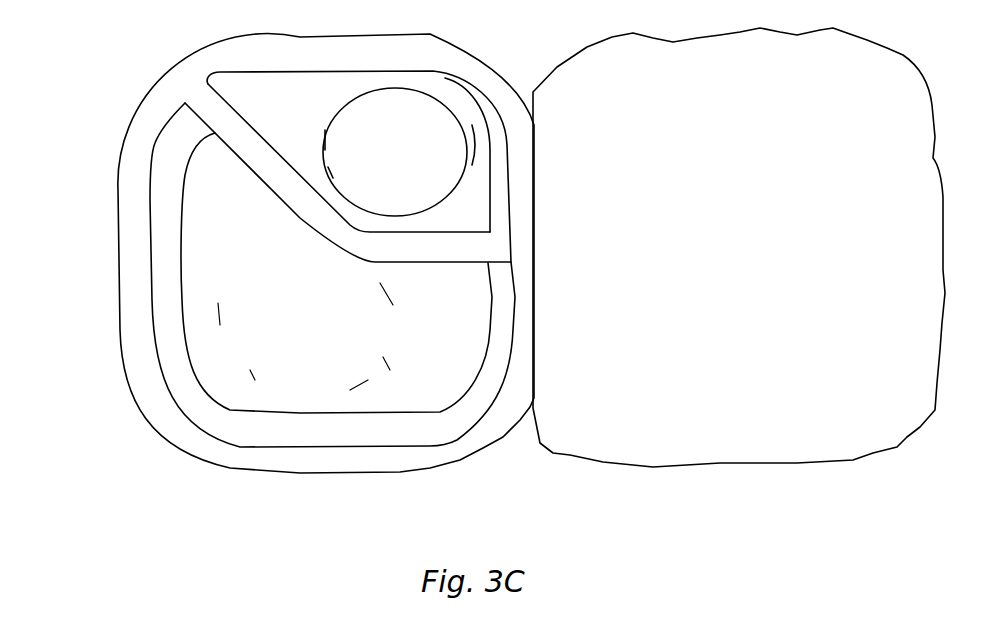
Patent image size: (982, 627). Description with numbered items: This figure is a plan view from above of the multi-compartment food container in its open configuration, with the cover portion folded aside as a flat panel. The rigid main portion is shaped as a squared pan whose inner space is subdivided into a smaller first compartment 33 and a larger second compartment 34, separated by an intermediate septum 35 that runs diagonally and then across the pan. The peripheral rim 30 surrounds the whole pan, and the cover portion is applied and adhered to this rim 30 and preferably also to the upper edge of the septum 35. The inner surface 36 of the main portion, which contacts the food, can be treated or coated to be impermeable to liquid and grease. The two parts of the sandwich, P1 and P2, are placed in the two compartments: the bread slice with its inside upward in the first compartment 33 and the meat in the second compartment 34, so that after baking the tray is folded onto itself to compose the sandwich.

The peripheral rim 30 is at (141, 346).
The first compartment 33 is at (400, 174).
The second compartment 34 is at (330, 358).
The intermediate septum 35 is at (348, 178).
The inner surface 36 is at (212, 372).
The first sandwich part P1 is at (333, 110).
The second sandwich part P2 is at (263, 252).